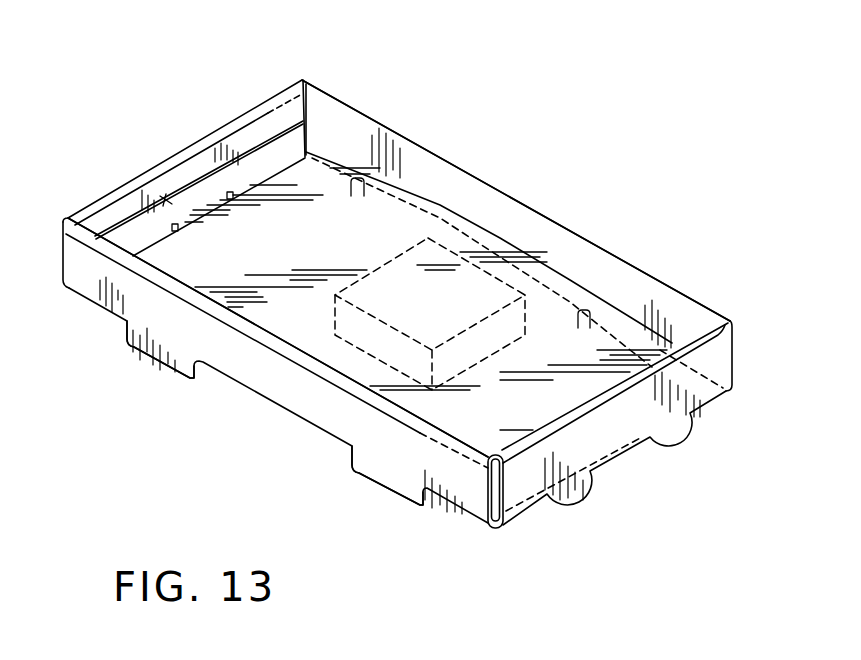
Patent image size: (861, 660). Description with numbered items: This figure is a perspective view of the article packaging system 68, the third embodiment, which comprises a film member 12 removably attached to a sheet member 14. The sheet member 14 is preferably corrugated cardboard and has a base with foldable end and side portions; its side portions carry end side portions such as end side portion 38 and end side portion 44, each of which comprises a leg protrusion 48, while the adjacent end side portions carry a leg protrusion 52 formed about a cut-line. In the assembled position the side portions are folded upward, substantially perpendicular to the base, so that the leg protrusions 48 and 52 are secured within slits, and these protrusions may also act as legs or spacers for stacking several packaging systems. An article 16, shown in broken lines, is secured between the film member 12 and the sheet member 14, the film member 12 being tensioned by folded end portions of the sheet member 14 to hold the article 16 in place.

The film member 12 is at (355, 168).
The sheet member 14 is at (168, 200).
The article 16 is at (513, 290).
The end side portion 38 is at (280, 378).
The end side portion 44 is at (506, 218).
The leg protrusion 48 is at (387, 215).
The leg protrusion 52 is at (165, 362).
The third embodiment of the article packaging system 68 is at (201, 101).